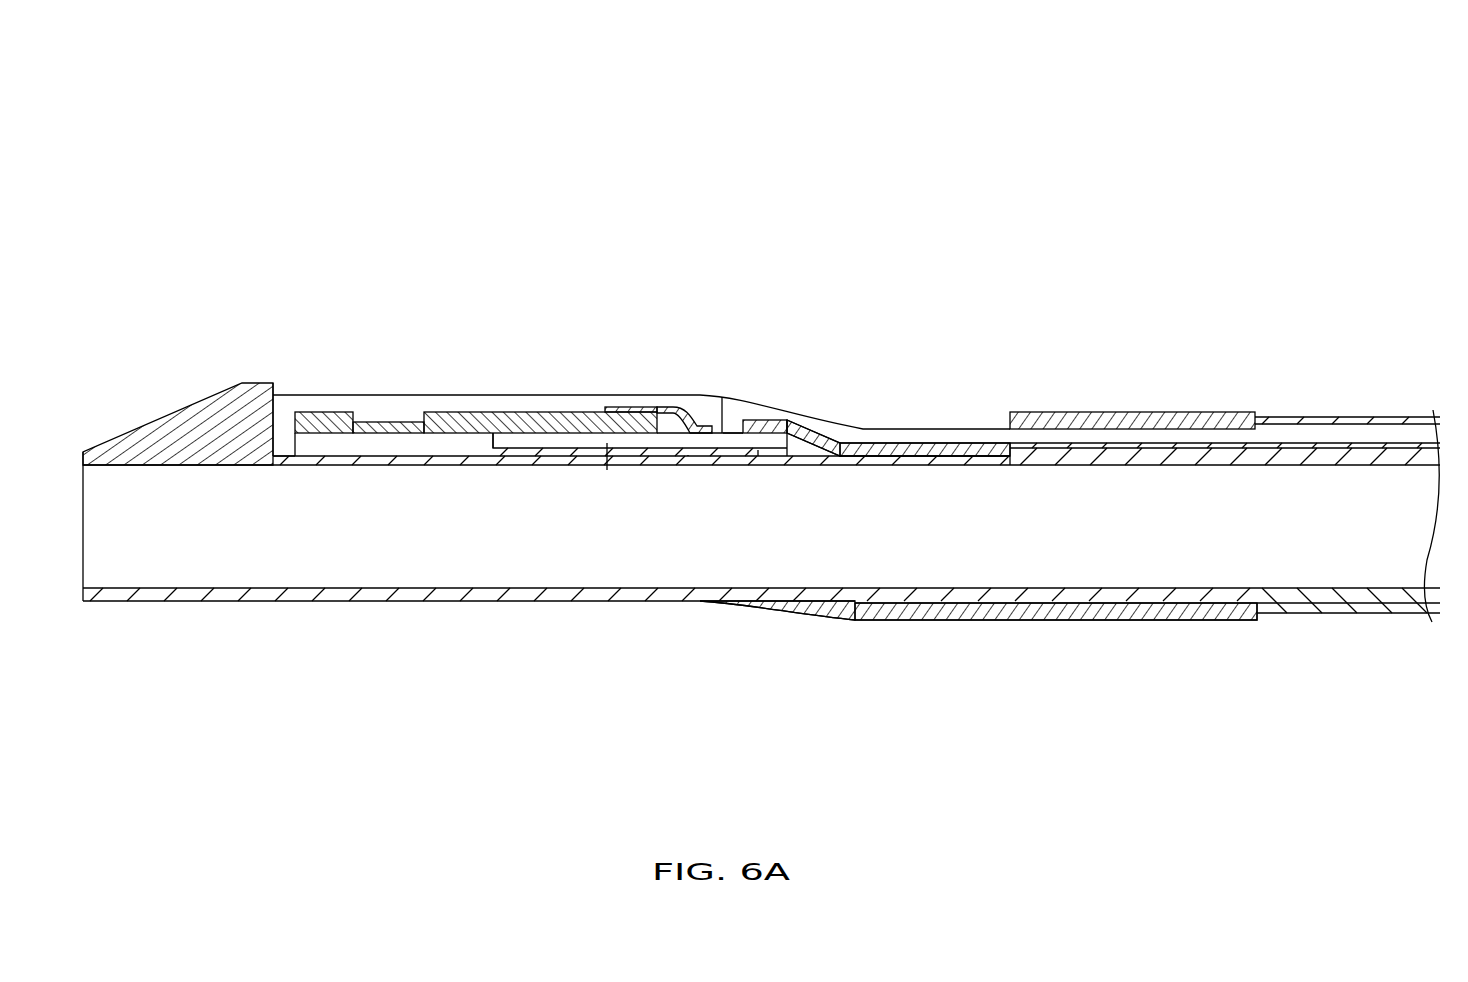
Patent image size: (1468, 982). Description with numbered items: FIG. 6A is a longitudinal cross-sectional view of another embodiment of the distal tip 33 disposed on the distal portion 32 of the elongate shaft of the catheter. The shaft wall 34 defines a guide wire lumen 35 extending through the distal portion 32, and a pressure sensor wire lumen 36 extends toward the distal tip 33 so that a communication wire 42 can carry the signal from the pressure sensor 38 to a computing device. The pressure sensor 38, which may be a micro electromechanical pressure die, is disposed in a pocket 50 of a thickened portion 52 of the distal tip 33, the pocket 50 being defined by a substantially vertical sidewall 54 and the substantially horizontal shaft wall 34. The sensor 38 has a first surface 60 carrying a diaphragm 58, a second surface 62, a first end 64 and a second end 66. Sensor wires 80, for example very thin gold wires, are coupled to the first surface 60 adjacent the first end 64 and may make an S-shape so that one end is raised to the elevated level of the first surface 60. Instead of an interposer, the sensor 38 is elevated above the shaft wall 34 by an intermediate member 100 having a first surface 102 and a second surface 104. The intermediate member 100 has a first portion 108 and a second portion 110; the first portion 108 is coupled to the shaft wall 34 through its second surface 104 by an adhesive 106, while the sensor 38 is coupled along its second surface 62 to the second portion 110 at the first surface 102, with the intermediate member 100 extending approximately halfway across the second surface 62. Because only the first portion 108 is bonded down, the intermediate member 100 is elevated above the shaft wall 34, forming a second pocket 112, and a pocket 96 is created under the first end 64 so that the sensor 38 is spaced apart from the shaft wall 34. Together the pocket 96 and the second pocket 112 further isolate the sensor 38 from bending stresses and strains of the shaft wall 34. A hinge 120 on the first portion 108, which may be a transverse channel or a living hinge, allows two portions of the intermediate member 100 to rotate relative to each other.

The distal portion 32 is at (768, 426).
The distal tip 33 is at (761, 376).
The shaft wall 34 is at (393, 460).
The guide wire lumen 35 is at (918, 540).
The pressure sensor wire lumen 36 is at (1404, 420).
The pressure sensor 38 is at (496, 424).
The communication wire 42 is at (848, 444).
The pocket 50 is at (477, 397).
The thickened portion 52 is at (222, 425).
The sidewall 54 is at (274, 400).
The diaphragm 58 is at (388, 407).
The first surface 60 is at (522, 412).
The second surface 62 is at (326, 433).
The first end 64 is at (627, 420).
The second end 66 is at (327, 422).
The sensor wires 80 is at (652, 410).
The pocket 96 is at (295, 445).
The intermediate member 100 is at (607, 470).
The first surface 102 is at (722, 400).
The second surface 104 is at (687, 456).
The adhesive 106 is at (759, 452).
The first portion 108 is at (756, 438).
The second portion 110 is at (512, 443).
The second pocket 112 is at (567, 455).
The hinge 120 is at (733, 427).